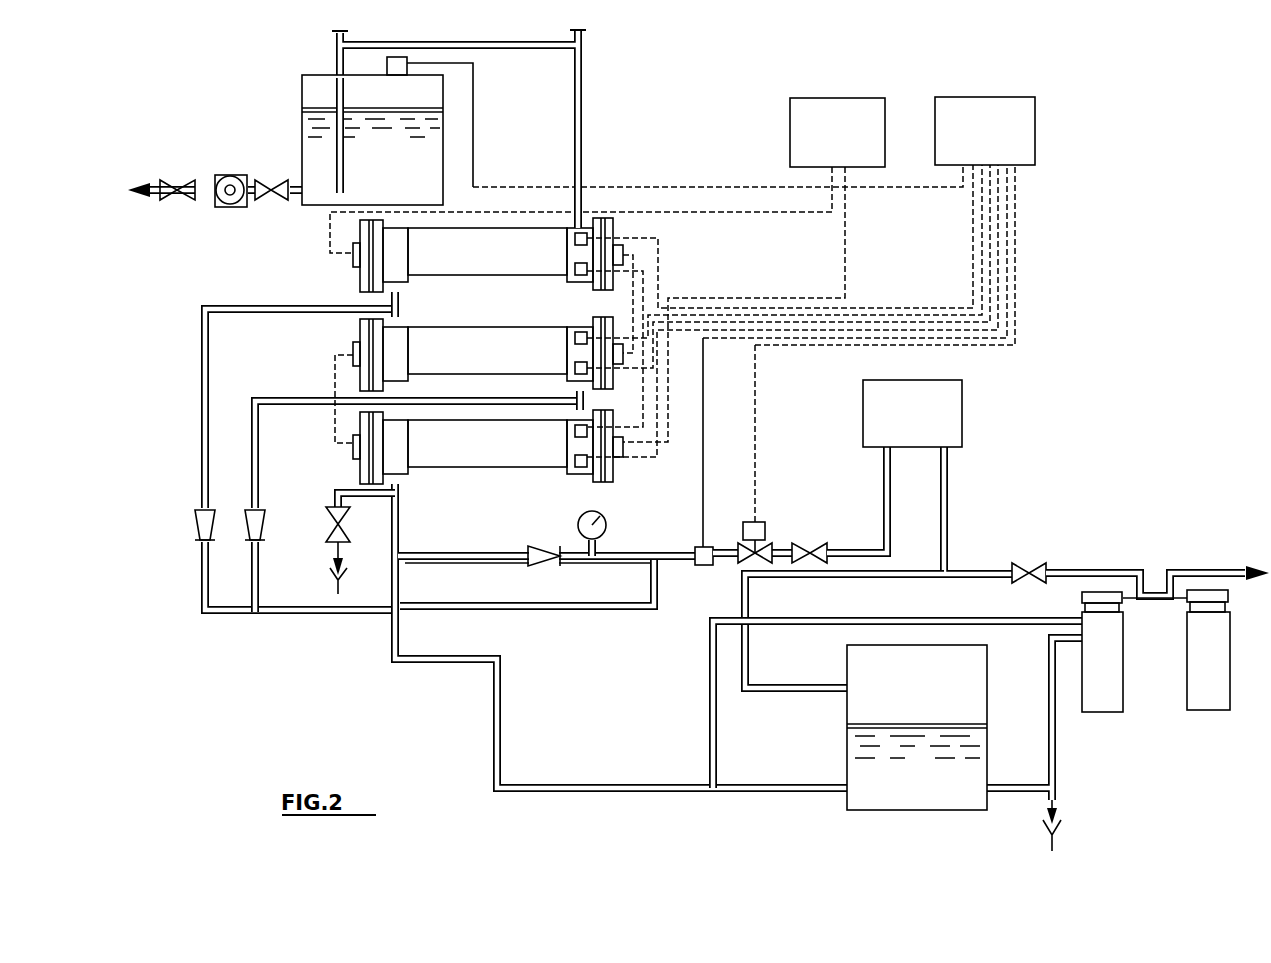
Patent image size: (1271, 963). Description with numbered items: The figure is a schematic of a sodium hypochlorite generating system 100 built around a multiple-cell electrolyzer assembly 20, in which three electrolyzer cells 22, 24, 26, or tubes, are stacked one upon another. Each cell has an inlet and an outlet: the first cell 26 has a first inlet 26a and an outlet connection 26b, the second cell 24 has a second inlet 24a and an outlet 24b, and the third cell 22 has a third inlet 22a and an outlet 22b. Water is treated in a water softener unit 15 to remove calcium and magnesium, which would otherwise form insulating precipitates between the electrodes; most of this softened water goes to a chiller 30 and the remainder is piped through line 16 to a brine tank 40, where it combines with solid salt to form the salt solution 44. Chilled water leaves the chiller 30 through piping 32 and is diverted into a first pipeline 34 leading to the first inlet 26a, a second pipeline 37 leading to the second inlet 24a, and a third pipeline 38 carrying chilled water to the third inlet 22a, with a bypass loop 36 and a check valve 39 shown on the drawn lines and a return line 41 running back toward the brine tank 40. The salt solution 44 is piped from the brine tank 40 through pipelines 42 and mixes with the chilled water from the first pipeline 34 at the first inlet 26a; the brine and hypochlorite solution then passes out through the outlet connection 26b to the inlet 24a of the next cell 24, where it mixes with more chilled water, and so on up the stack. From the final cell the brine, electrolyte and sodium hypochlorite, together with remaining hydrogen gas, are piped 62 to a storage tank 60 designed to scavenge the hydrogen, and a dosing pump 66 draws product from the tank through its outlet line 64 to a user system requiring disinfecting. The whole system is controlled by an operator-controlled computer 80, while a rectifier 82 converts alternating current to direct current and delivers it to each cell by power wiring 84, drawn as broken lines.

The fluid processing system 100 is at (1083, 401).
The water softener unit 15 is at (1202, 673).
The outlet line 16 is at (1102, 577).
The electrolyzer assembly 20 is at (672, 255).
The electrolyzer cell 22 is at (424, 262).
The inlet 22a is at (398, 292).
The outlet 22b is at (578, 190).
The electrolyzer cell 24 is at (424, 361).
The inlet 24a is at (580, 378).
The second vessel inlet line 24b is at (398, 317).
The electrolyzer cell 26 is at (424, 454).
The inlet 26a is at (397, 510).
The outlet connection 26b is at (578, 418).
The chiller 30 is at (962, 412).
The piping 32 is at (887, 510).
The first pipeline 34 is at (470, 557).
The bypass loop 36 is at (560, 610).
The second pipeline 37 is at (257, 462).
The third pipeline 38 is at (208, 358).
The check valve 39 is at (200, 520).
The brine tank 40 is at (998, 695).
The return line 41 is at (758, 600).
The pipelines 42 is at (548, 800).
The salt solution 44 is at (912, 800).
The storage tank 60 is at (385, 185).
The piping 62 is at (595, 72).
The tank outlet line 64 is at (295, 194).
The dosing pump 66 is at (237, 205).
The operator-controlled computer 80 is at (971, 143).
The rectifier 82 is at (823, 145).
The power wiring 84 is at (1030, 243).